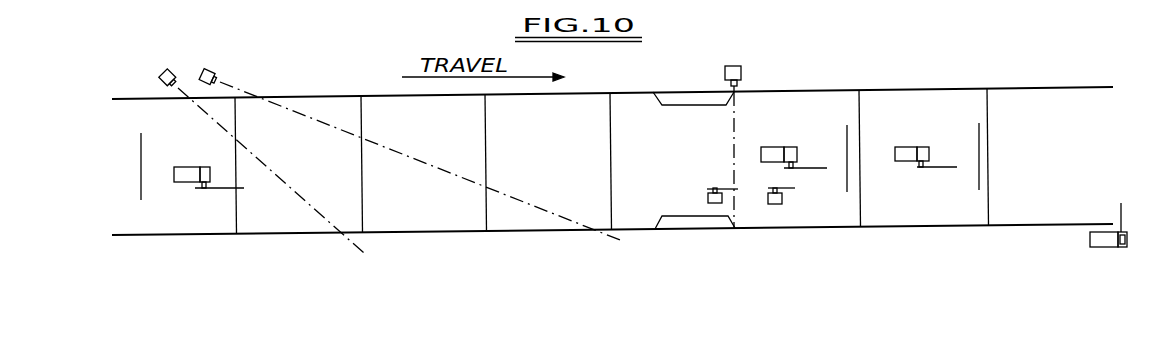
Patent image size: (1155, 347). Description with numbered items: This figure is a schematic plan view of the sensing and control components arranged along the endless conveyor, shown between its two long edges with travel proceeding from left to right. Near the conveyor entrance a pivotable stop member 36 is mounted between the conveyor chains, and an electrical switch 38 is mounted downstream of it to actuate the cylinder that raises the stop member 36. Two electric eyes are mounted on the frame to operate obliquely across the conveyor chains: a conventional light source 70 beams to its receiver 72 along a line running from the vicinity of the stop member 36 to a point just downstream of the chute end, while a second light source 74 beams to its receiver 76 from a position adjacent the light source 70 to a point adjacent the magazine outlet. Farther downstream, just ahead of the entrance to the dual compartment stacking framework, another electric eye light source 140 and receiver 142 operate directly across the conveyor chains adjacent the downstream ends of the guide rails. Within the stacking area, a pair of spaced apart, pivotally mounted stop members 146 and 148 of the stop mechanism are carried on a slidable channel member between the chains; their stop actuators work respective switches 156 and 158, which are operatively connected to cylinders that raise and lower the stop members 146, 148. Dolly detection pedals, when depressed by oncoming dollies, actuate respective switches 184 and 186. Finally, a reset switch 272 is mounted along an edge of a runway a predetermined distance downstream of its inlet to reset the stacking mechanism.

The stop member 36 is at (141, 172).
The electrical switch 38 is at (186, 166).
The electric eye light source 70 is at (161, 73).
The receiver 72 is at (366, 253).
The second electric eye light source 74 is at (205, 72).
The receiver 76 is at (618, 240).
The electric eye light source 140 is at (738, 63).
The receiver 142 is at (724, 250).
The stop member 146 is at (847, 138).
The stop member 148 is at (978, 138).
The switch 156 is at (783, 147).
The switch 158 is at (905, 162).
The switch 184 is at (708, 198).
The switch 186 is at (781, 204).
The reset switch 272 is at (1108, 248).